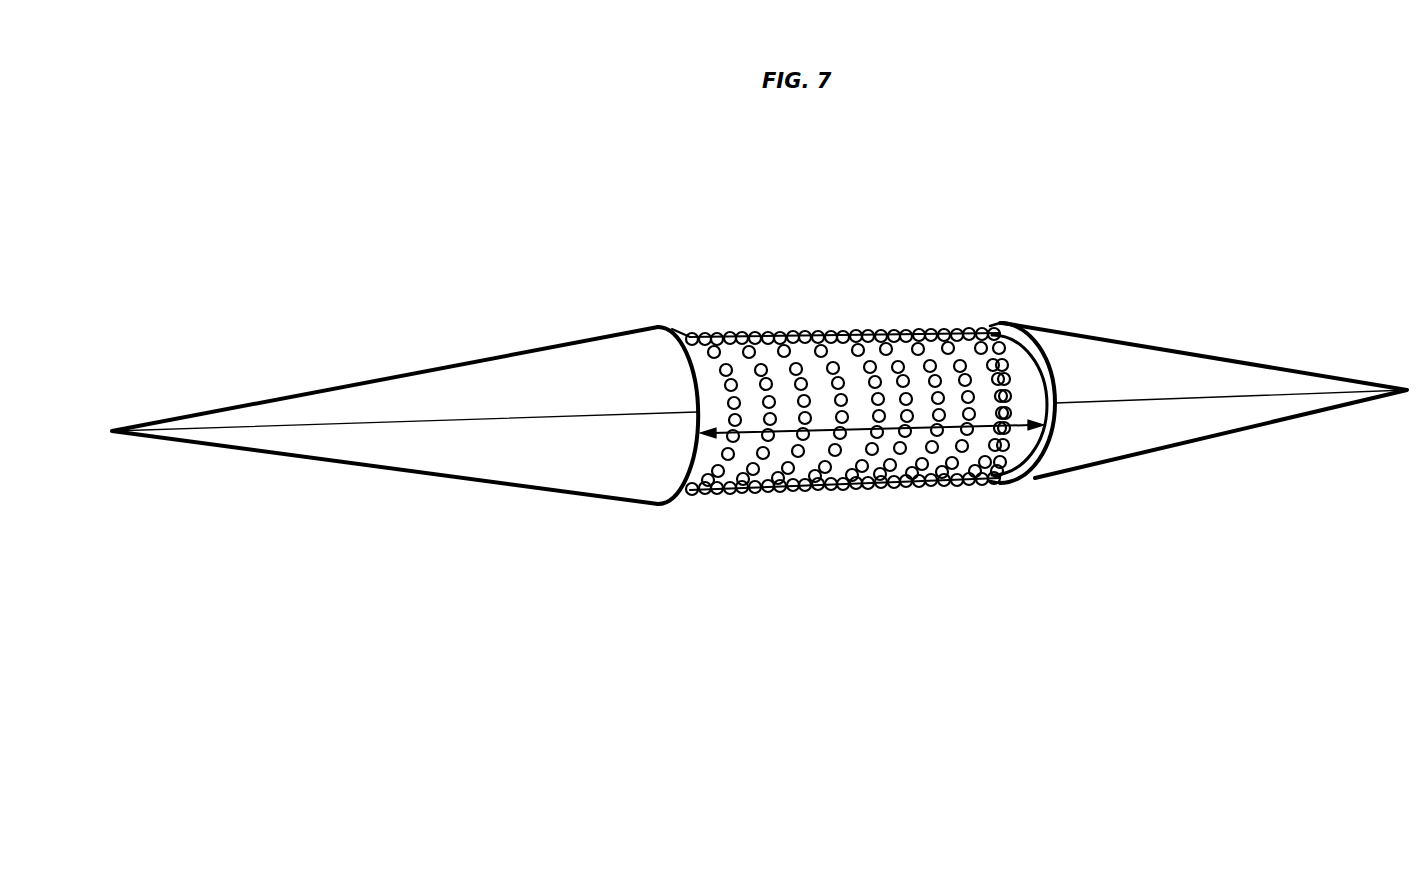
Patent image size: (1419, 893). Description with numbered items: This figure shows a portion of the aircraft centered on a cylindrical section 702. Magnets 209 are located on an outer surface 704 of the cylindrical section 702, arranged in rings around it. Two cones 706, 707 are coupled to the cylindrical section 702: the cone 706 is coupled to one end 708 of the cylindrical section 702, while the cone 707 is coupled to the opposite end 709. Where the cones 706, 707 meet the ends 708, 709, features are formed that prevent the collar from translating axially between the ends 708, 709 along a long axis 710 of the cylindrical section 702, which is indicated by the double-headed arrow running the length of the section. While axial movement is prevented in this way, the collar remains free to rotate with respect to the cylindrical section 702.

The cylindrical section 702 is at (845, 403).
The outer surface 704 is at (862, 342).
The magnets 209 is at (848, 376).
The cone 706 is at (446, 386).
The cone 707 is at (1166, 367).
The end 708 is at (675, 331).
The end 709 is at (1003, 322).
The long axis 710 is at (1005, 430).